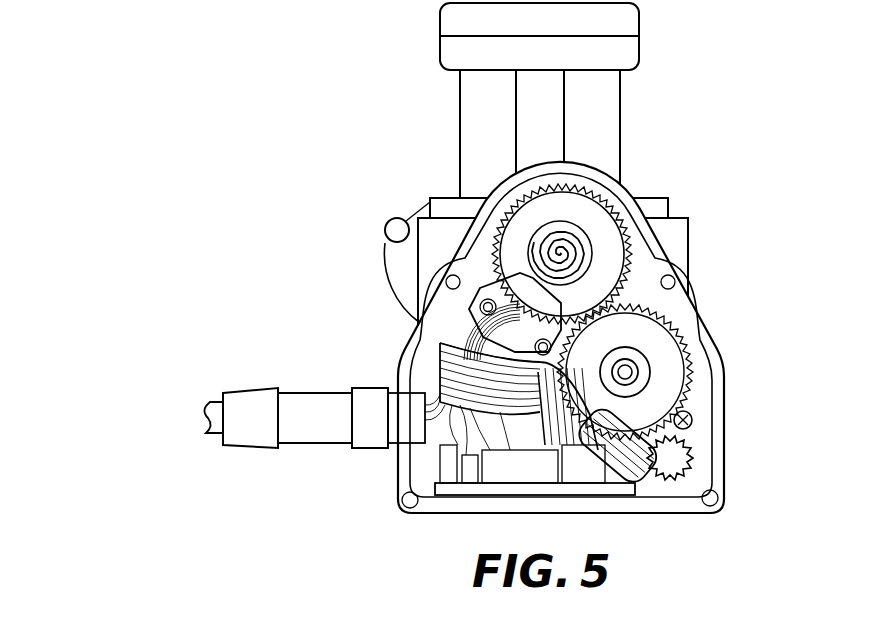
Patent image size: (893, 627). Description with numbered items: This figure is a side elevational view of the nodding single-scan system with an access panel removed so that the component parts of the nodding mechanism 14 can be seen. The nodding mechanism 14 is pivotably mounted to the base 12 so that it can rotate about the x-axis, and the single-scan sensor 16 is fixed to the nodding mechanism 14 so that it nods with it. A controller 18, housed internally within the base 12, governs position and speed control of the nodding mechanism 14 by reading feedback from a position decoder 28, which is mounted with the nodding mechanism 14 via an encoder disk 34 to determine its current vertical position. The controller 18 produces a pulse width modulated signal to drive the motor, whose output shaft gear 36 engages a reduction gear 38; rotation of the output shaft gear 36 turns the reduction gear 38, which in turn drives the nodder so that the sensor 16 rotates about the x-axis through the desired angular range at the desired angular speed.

The base 12 is at (180, 418).
The nodding mechanism 14 is at (678, 233).
The single-scan sensor 16 is at (643, 52).
The controller 18 is at (620, 488).
The position decoder 28 is at (497, 292).
The encoder disk 34 is at (600, 227).
The output shaft gear 36 is at (677, 458).
The reduction gear 38 is at (677, 360).